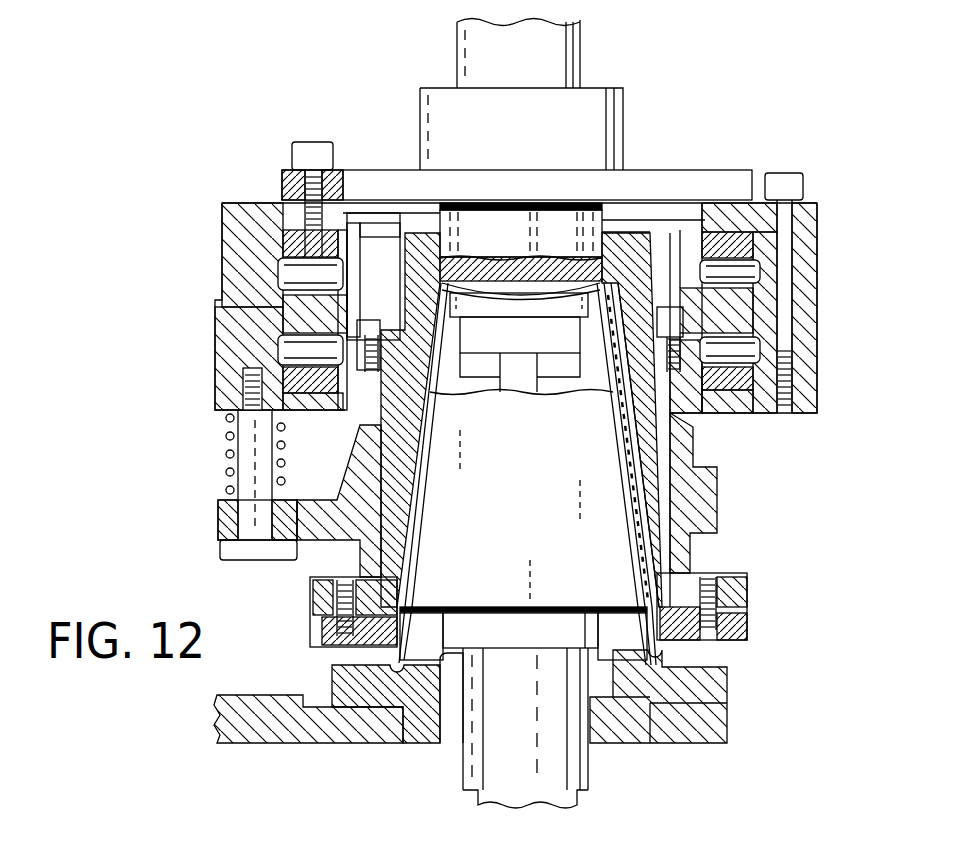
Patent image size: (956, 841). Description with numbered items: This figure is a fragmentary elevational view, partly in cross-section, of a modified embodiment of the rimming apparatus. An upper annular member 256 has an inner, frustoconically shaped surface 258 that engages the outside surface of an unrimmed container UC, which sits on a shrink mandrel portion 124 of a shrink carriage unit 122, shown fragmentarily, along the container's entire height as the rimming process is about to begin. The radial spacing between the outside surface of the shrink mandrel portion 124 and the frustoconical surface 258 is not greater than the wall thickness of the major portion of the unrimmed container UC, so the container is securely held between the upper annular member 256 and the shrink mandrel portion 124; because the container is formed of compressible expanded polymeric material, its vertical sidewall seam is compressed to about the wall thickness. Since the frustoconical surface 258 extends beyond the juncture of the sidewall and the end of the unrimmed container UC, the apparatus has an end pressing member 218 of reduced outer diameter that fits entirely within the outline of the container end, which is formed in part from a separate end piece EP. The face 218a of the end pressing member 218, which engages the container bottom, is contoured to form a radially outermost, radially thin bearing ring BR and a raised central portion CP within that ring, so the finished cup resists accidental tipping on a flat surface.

The raised central portion CP is at (527, 290).
The face of the end pressing member 218a is at (597, 225).
The end pressing member 218 is at (605, 258).
The bearing ring BR is at (612, 285).
The inner plate IP is at (465, 293).
The separate end piece EP is at (482, 320).
The shrink mandrel portion 124 is at (587, 570).
The inner, frustoconically shaped surface 258 is at (640, 490).
The upper annular member 256 is at (643, 453).
The unrimmed container UC is at (673, 500).
The shrink carriage unit 122 is at (603, 783).